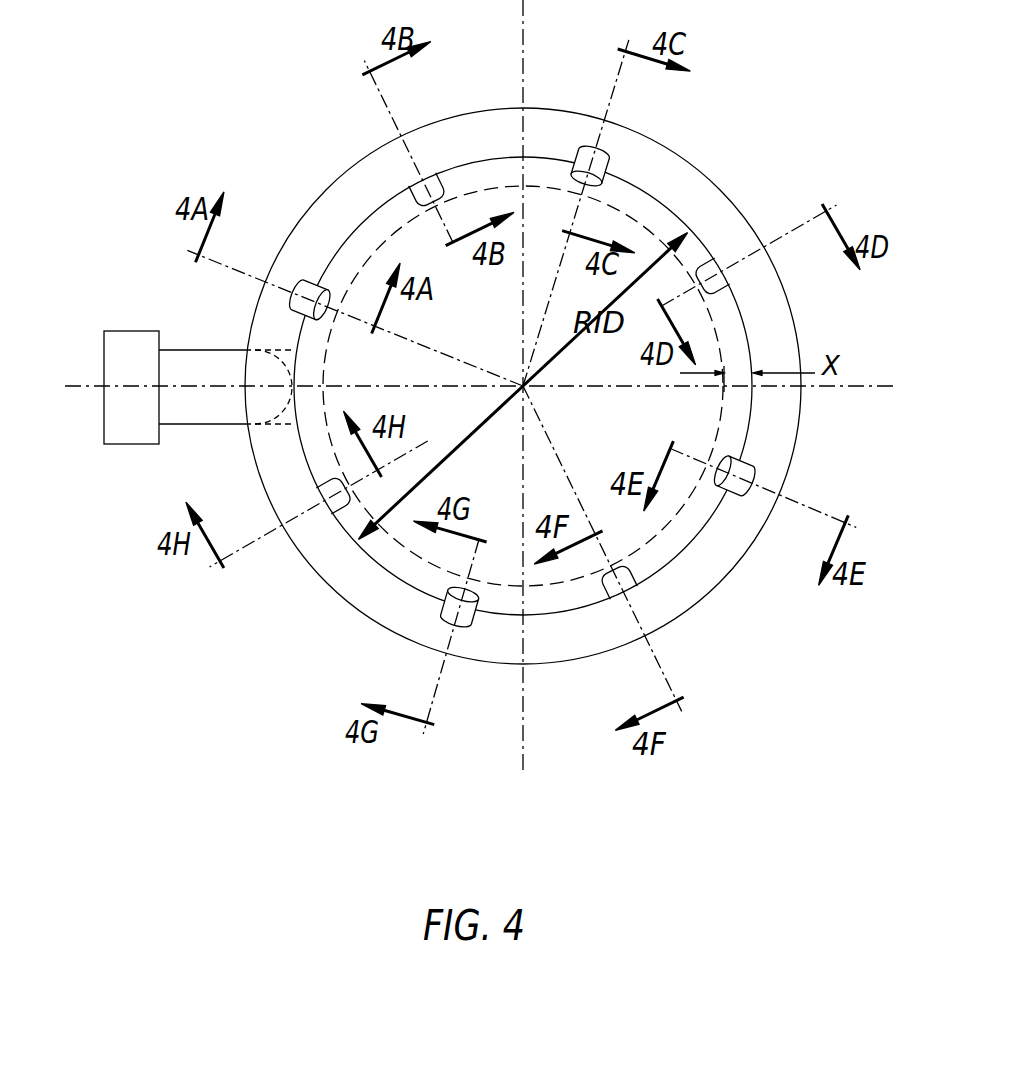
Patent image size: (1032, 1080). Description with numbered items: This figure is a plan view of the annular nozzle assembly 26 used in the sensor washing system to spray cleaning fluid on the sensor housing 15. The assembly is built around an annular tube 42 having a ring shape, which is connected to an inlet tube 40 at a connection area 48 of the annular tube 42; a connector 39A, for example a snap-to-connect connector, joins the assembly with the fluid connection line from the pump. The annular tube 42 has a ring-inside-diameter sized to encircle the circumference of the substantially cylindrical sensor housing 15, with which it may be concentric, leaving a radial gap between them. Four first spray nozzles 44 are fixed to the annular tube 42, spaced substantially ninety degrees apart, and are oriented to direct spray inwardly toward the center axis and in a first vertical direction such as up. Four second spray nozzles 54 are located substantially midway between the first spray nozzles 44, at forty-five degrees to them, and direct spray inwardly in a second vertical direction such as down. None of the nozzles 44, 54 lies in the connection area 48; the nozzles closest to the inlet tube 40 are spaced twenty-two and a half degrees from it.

The sensor housing 15 is at (613, 207).
The annular nozzle assembly 26 is at (795, 102).
The connector 39A is at (128, 331).
The inlet tube 40 is at (188, 425).
The annular tube 42 is at (345, 603).
The first spray nozzles 44 is at (578, 160).
The connection area 48 is at (250, 347).
The second spray nozzles 54 is at (413, 198).